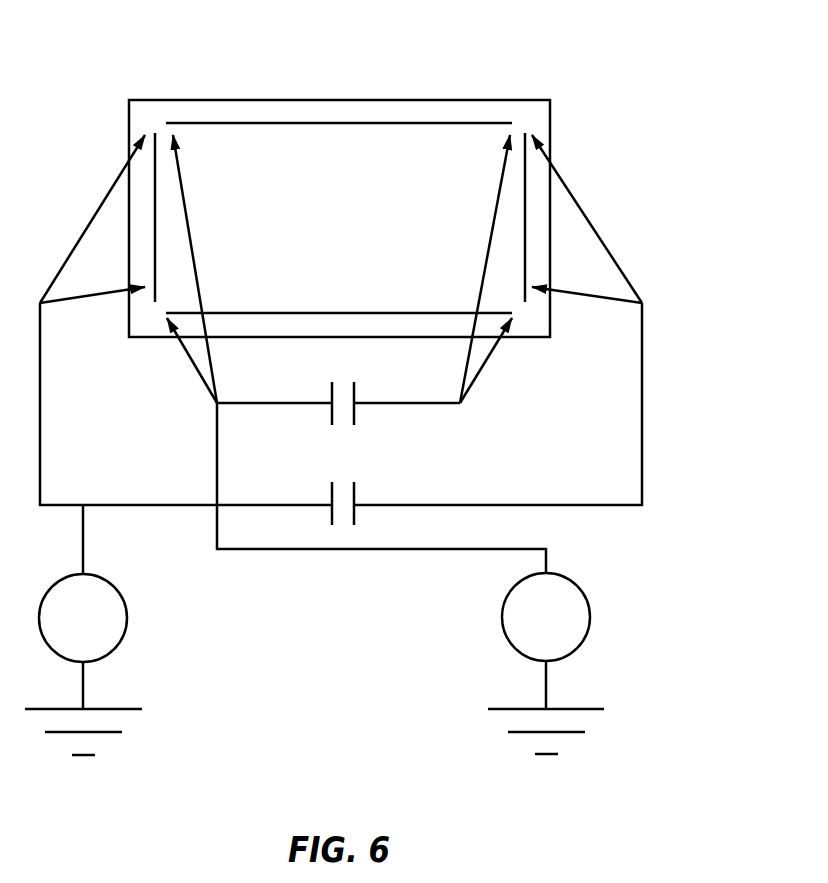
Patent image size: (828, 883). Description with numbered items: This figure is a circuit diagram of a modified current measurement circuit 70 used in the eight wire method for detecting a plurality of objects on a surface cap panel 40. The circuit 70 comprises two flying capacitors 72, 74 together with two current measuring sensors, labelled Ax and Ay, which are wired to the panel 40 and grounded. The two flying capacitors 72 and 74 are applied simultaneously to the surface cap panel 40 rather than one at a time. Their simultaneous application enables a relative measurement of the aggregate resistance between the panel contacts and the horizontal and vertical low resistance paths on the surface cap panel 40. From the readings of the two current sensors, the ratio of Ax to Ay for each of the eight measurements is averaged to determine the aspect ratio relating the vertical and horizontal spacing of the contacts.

The surface cap panel 40 is at (342, 100).
The modified current measurement circuit 70 is at (642, 398).
The flying capacitor 72 is at (357, 485).
The flying capacitor 74 is at (357, 385).